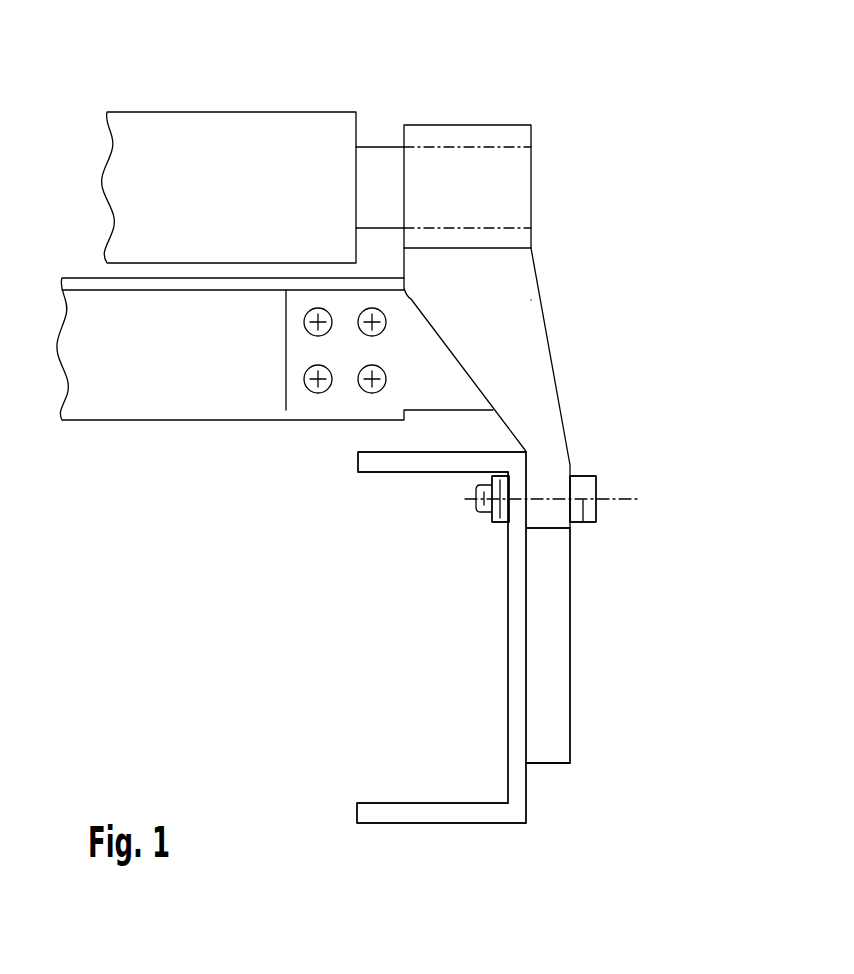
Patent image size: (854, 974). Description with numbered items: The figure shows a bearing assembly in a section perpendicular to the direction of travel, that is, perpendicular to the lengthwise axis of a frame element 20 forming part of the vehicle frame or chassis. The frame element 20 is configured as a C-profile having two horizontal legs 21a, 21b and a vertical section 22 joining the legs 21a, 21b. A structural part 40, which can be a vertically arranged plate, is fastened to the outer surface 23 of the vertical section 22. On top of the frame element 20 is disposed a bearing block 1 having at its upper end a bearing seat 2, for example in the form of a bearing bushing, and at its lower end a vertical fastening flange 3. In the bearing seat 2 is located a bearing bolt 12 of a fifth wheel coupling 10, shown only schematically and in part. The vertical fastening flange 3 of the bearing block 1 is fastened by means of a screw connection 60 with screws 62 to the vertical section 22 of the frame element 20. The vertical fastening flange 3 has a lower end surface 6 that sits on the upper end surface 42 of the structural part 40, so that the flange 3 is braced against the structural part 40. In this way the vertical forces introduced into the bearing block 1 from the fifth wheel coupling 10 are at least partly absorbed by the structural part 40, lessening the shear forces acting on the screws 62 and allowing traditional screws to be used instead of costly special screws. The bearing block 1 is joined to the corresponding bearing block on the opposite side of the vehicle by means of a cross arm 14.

The bearing block 1 is at (572, 311).
The bearing seat 2 is at (531, 172).
The vertical fastening flange 3 is at (573, 463).
The lower end surface 6 is at (570, 505).
The fifth wheel coupling 10 is at (233, 133).
The bearing bolt 12 is at (383, 168).
The cross arm 14 is at (157, 440).
The frame element 20 is at (528, 803).
The horizontal leg 21a is at (364, 461).
The horizontal leg 21b is at (375, 816).
The vertical section 22 is at (514, 643).
The outer surface 23 is at (528, 780).
The structural part 40 is at (573, 683).
The upper end surface 42 is at (597, 500).
The screw connection 60 is at (612, 520).
The screws 62 is at (583, 515).